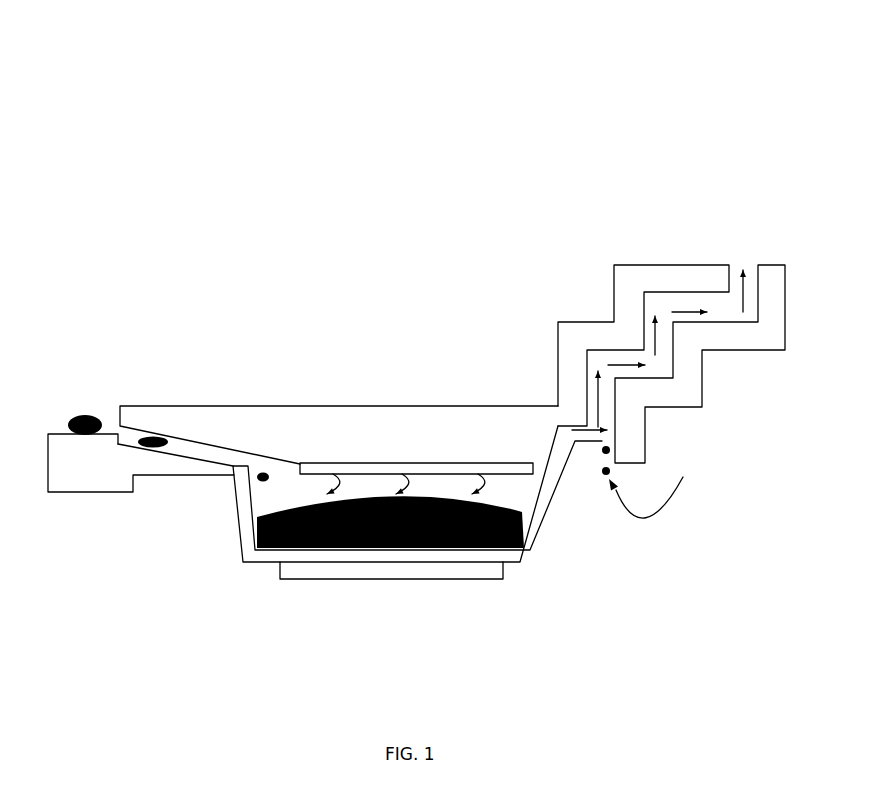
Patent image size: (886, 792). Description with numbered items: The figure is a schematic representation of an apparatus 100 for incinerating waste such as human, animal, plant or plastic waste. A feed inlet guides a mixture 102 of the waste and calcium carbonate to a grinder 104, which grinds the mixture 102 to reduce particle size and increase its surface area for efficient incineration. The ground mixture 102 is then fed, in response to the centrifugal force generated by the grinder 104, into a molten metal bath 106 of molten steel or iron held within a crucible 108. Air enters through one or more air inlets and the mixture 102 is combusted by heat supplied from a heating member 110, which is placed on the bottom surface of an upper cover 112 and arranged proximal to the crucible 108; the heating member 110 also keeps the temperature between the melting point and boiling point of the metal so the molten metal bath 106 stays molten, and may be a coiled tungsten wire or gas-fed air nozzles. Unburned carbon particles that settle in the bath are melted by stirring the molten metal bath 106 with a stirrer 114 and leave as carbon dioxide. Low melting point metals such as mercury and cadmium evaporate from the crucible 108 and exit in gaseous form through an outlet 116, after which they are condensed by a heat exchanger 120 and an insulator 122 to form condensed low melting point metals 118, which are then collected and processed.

The apparatus 100 is at (259, 141).
The mixture 102 is at (85, 415).
The grinder 104 is at (98, 492).
The molten metal bath 106 is at (412, 497).
The crucible 108 is at (260, 562).
The heating member 110 is at (318, 465).
The upper cover 112 is at (247, 417).
The stirrer 114 is at (438, 570).
The outlet 116 is at (665, 497).
The condensed low melting point metals 118 is at (602, 455).
The heat exchanger 120 is at (693, 407).
The insulator 122 is at (592, 322).